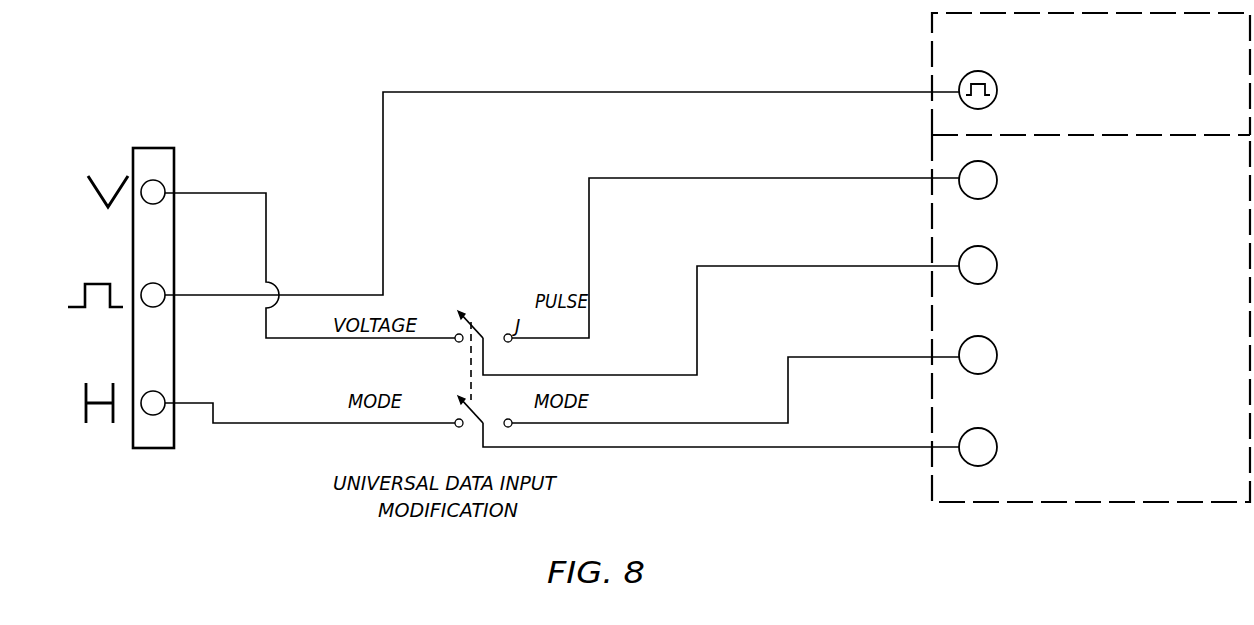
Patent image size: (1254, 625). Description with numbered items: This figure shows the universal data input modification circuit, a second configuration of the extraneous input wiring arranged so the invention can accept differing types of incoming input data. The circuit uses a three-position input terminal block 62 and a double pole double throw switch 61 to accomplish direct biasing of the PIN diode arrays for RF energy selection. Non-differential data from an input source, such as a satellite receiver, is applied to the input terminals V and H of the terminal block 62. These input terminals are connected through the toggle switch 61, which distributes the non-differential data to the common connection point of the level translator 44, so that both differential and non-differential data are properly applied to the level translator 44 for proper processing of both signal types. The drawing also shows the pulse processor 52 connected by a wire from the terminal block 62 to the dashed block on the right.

The three-position input terminal block 62 is at (157, 148).
The double pole double throw switch 61 is at (492, 314).
The pulse processor 52 is at (1212, 52).
The level translator 44 is at (1232, 170).